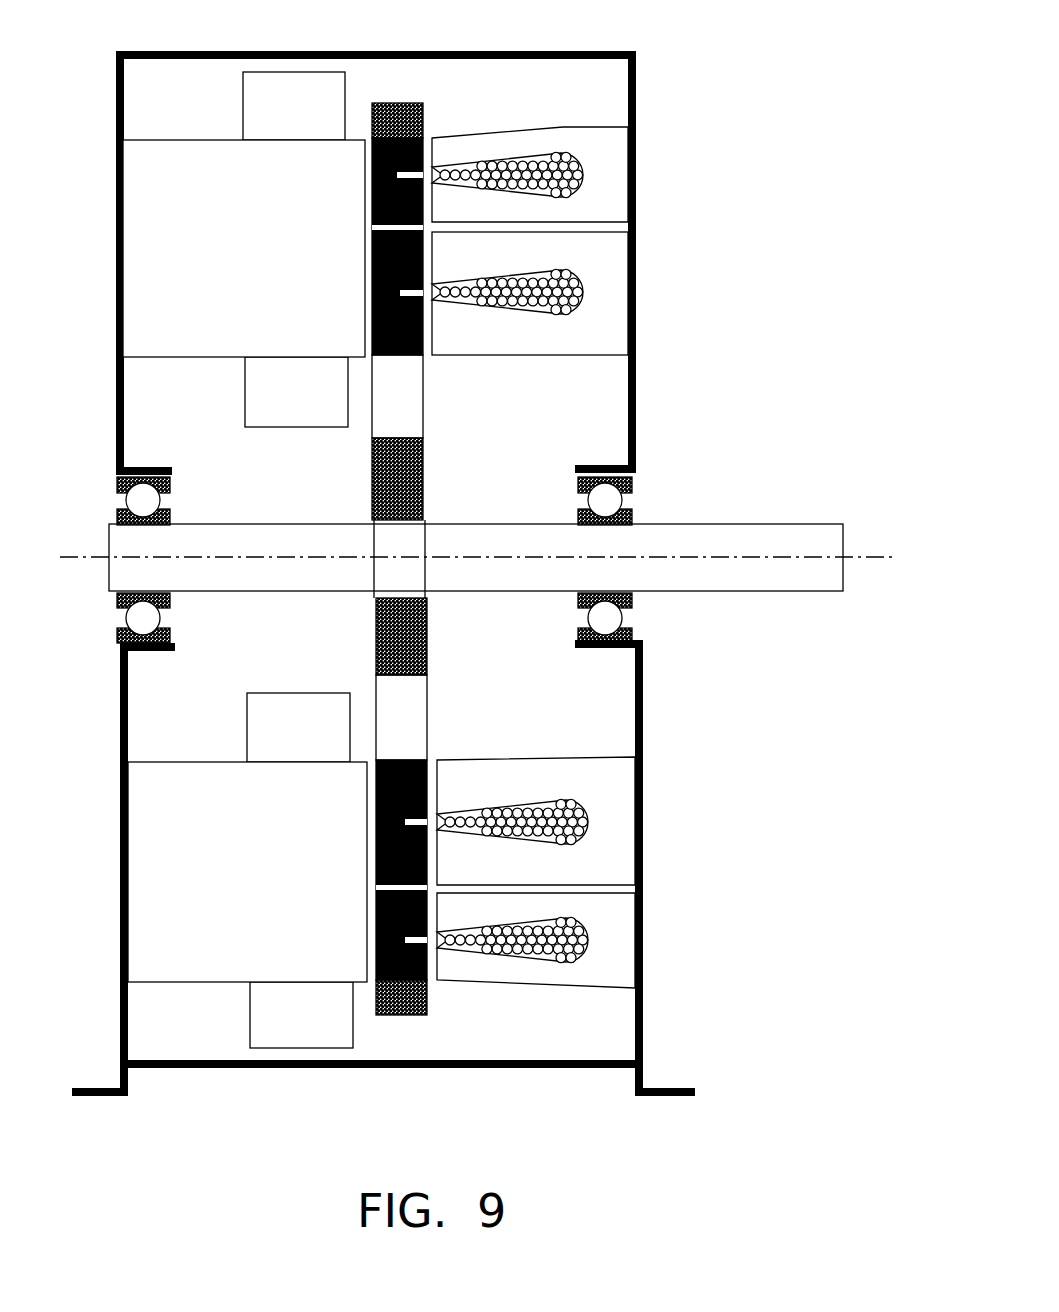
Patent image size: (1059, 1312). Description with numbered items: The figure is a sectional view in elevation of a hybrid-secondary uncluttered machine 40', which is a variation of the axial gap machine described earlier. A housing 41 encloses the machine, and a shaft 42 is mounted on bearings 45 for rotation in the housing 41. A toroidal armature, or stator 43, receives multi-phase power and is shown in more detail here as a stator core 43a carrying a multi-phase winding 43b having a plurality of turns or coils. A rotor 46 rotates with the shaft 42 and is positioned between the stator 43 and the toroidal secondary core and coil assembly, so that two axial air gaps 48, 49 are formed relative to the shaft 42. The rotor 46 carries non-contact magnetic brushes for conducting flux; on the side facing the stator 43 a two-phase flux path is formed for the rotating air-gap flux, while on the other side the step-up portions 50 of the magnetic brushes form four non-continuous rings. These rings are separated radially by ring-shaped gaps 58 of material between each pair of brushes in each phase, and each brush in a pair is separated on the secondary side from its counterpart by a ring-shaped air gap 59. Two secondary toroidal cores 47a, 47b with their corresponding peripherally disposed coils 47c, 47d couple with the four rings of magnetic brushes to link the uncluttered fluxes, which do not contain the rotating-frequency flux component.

The machine 40' is at (722, 31).
The housing 41 is at (640, 442).
The shaft 42 is at (718, 520).
The toroidal armature (stator) 43 is at (206, 558).
The stator core 43a is at (253, 237).
The multi-phase winding 43b is at (288, 110).
The bearings 45 is at (632, 513).
The rotor 46 is at (412, 116).
The secondary toroidal core 47a is at (608, 210).
The secondary toroidal core 47b is at (617, 327).
The coil 47c is at (583, 175).
The coil 47d is at (585, 291).
The axial air gap 48 is at (367, 356).
The axial air gap 49 is at (425, 356).
The step-up portions 50 is at (425, 168).
The ring-shaped gaps 58 is at (410, 228).
The ring-shaped air gap 59 is at (424, 295).